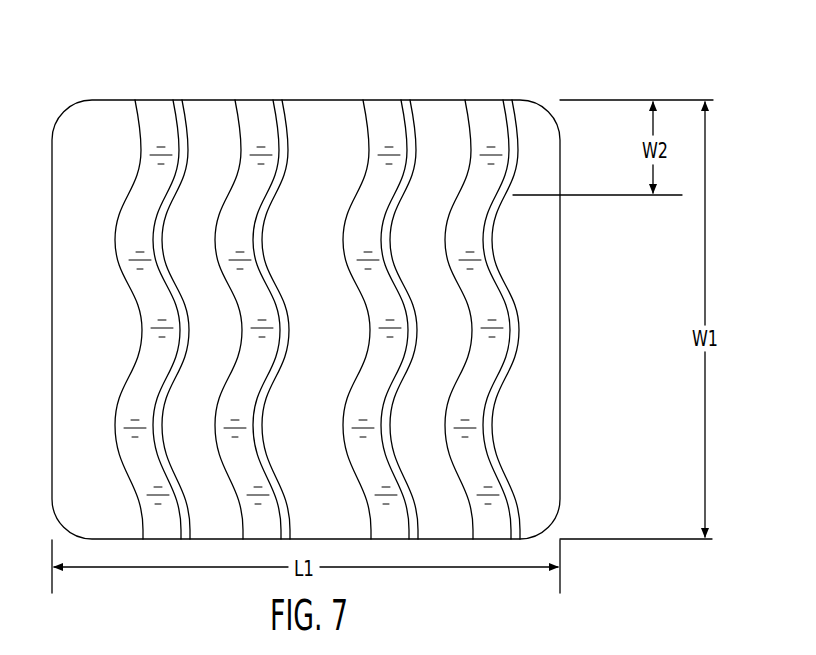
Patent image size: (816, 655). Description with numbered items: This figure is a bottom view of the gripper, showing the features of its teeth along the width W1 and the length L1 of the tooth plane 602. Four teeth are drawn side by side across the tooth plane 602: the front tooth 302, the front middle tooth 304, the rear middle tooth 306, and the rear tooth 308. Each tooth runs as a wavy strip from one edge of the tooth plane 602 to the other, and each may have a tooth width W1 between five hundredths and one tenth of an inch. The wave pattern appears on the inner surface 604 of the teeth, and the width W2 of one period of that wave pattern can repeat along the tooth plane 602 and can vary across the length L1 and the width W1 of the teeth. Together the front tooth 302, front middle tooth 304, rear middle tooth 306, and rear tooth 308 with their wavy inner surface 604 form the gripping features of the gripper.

The front tooth 302 is at (155, 117).
The front middle tooth 304 is at (252, 110).
The rear middle tooth 306 is at (385, 110).
The rear tooth 308 is at (498, 272).
The tooth plane 602 is at (317, 120).
The inner surface 604 is at (472, 122).